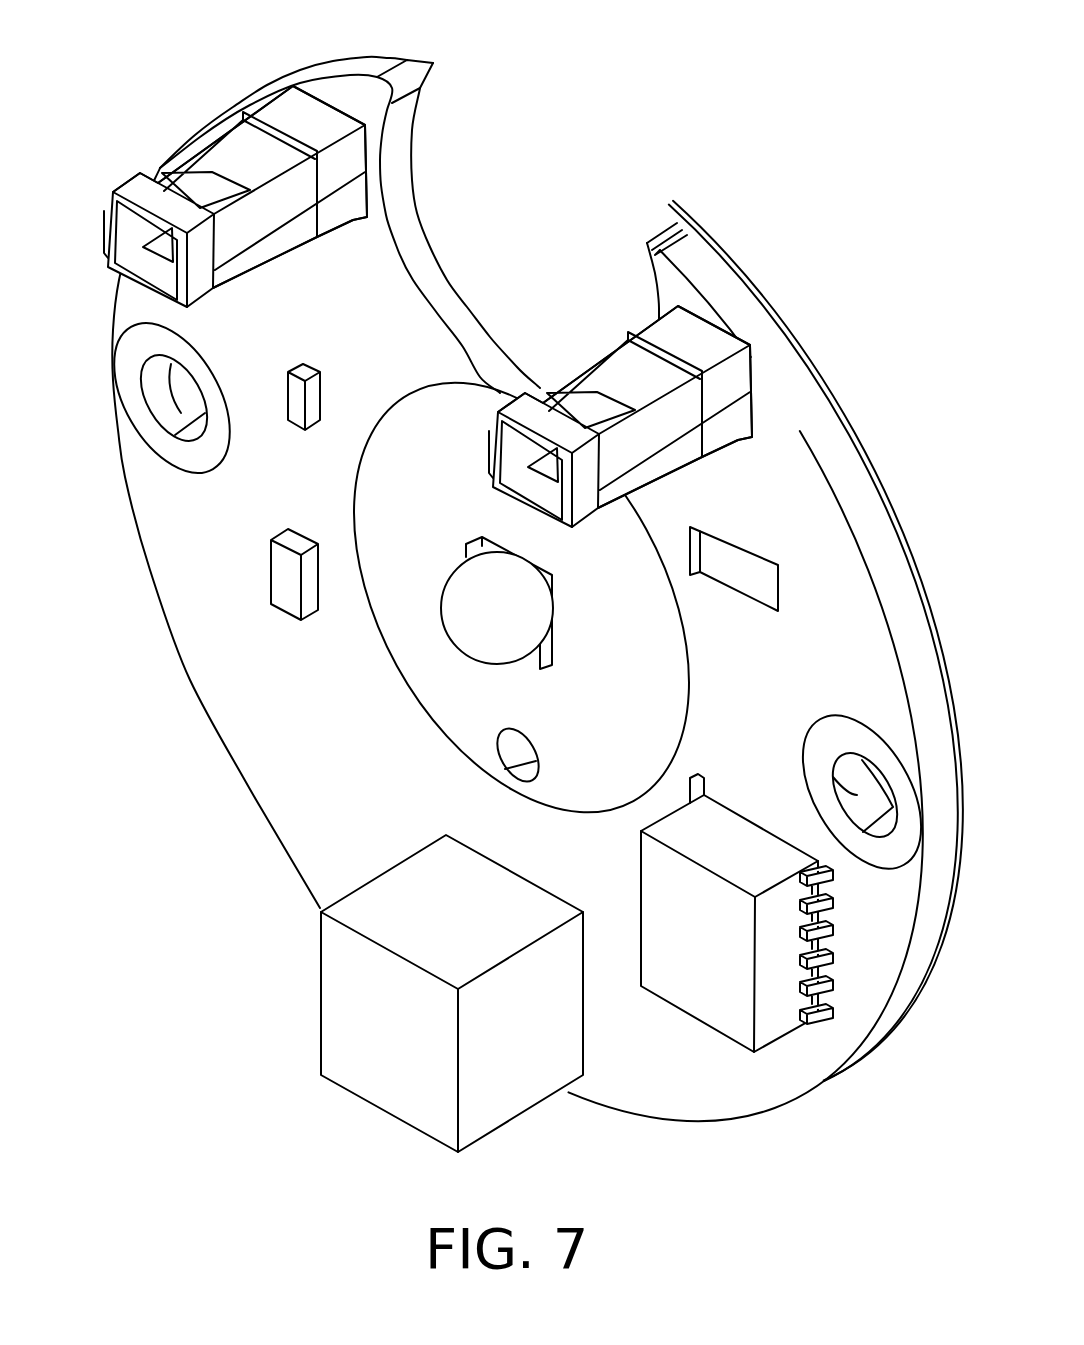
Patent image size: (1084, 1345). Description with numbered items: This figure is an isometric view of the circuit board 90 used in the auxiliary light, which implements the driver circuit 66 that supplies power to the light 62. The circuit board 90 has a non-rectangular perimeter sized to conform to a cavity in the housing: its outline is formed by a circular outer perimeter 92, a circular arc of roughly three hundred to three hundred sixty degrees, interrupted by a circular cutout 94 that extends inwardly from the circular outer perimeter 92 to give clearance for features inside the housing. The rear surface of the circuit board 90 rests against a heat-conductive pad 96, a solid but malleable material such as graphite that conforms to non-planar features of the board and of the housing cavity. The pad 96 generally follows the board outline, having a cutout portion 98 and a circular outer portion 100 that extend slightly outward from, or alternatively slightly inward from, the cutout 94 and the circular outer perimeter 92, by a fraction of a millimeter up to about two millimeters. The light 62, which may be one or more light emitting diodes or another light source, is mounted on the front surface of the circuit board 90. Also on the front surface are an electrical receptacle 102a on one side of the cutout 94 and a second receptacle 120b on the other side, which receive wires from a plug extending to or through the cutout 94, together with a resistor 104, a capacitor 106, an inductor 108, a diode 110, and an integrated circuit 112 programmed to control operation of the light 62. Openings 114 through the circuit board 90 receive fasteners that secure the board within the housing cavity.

The light 62 is at (488, 623).
The driver circuit 66 is at (211, 852).
The circuit board 90 is at (222, 665).
The circular outer perimeter 92 is at (850, 468).
The cutout 94 is at (418, 254).
The heat-conductive pad 96 is at (409, 58).
The cutout portion 98 is at (434, 66).
The circular outer portion 100 is at (745, 265).
The electrical receptacle 102a is at (127, 212).
The resistor 104 is at (745, 562).
The capacitor 106 is at (318, 400).
The inductor 108 is at (408, 873).
The diode 110 is at (283, 570).
The integrated circuit 112 is at (652, 897).
The openings 114 is at (195, 392).
The second connector 120b is at (650, 458).